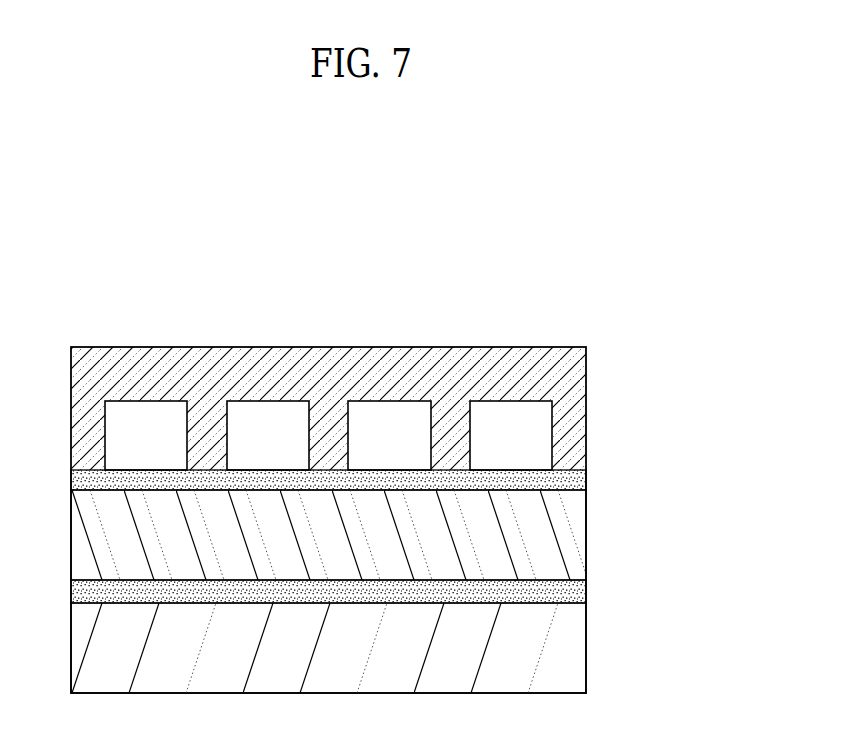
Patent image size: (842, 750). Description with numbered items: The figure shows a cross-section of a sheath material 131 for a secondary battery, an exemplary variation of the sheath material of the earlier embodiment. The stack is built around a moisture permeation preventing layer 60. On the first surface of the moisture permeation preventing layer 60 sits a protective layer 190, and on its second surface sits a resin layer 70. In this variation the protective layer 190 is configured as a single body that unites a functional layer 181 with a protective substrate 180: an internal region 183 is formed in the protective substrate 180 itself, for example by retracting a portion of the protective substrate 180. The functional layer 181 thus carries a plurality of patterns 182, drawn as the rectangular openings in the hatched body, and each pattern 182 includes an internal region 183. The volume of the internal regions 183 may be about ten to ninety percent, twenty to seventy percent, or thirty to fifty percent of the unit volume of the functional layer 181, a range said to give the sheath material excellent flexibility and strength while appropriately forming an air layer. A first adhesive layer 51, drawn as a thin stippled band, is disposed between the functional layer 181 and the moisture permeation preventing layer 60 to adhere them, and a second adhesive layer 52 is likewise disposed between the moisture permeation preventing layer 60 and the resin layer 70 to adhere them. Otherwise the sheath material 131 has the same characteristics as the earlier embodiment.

The sheath material 131 is at (346, 218).
The protective substrate 180 is at (586, 359).
The functional layer 181 is at (385, 435).
The pattern 182 is at (572, 428).
The internal region 183 is at (525, 439).
The protective layer 190 is at (411, 408).
The first adhesive layer 51 is at (571, 483).
The moisture permeation preventing layer 60 is at (565, 532).
The second adhesive layer 52 is at (571, 593).
The resin layer 70 is at (562, 660).